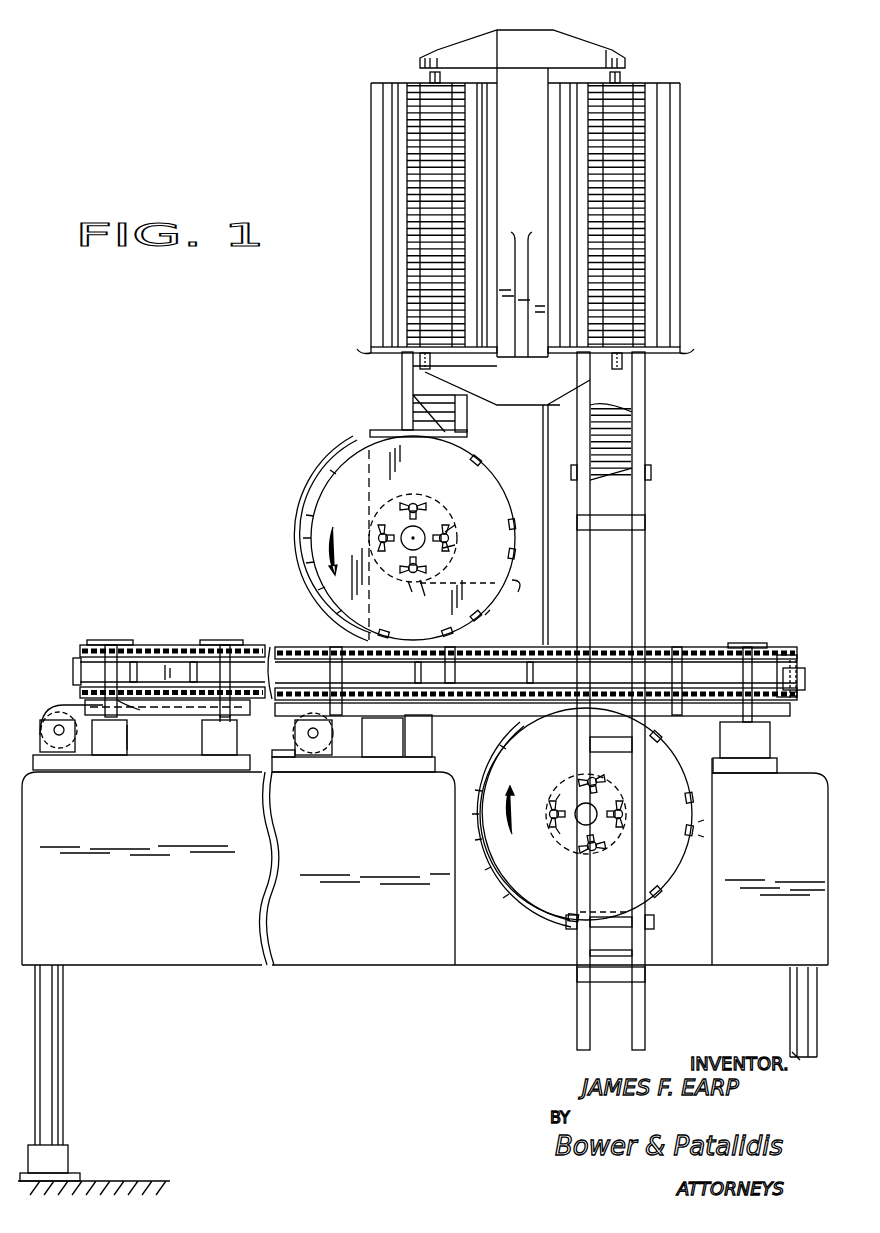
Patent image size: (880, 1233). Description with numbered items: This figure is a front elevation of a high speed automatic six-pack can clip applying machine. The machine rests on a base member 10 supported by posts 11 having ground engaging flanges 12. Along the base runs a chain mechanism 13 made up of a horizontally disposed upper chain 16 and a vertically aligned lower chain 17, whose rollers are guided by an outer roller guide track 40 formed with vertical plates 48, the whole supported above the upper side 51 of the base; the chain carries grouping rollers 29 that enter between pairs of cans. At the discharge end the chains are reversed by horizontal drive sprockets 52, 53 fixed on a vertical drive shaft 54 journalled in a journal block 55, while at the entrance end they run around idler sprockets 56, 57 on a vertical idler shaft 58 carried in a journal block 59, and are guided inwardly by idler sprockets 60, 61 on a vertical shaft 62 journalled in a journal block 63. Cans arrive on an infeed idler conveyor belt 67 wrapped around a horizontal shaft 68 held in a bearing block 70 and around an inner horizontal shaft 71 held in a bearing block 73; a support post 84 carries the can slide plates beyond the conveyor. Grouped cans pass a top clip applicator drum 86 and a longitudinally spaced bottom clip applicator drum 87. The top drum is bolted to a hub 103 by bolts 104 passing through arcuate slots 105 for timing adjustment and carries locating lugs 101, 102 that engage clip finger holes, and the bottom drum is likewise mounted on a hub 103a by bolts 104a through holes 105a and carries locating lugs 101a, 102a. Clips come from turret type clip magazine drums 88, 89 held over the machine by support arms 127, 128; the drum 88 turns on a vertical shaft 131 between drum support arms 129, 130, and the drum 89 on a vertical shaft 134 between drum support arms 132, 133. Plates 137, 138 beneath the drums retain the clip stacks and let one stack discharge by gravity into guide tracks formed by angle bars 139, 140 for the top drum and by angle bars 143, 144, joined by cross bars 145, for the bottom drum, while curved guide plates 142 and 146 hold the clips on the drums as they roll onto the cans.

The base member 10 is at (212, 968).
The posts 11 is at (50, 1040).
The ground engaging flanges 12 is at (72, 1173).
The chain mechanism 13 is at (158, 646).
The upper chain 16 is at (88, 643).
The lower chain 17 is at (78, 692).
The grouping roller 29 is at (110, 670).
The outer roller guide track 40 is at (178, 672).
The plates 48 is at (285, 700).
The upper side 51 is at (190, 767).
The horizontal drive sprocket 52 is at (750, 645).
The horizontal drive sprocket 53 is at (760, 712).
The vertical drive shaft 54 is at (745, 668).
The journal block 55 is at (760, 745).
The idler sprocket 56 is at (113, 645).
The idler sprocket 57 is at (120, 712).
The vertical idler shaft 58 is at (117, 740).
The journal block 59 is at (128, 738).
The idler sprocket 60 is at (225, 644).
The idler sprocket 61 is at (240, 714).
The vertical shaft 62 is at (222, 722).
The journal block 63 is at (232, 760).
The infeed idler conveyor belt 67 is at (52, 742).
The horizontal shaft 68 is at (59, 736).
The bearing block 70 is at (60, 738).
The horizontal shaft 71 is at (313, 740).
The bearing block 73 is at (335, 745).
The support post 84 is at (418, 765).
The top clip applicator drum 86 is at (325, 492).
The bottom clip applicator drum 87 is at (545, 890).
The clip magazine drum 88 is at (388, 141).
The clip magazine drum 89 is at (686, 156).
The locating lug 101 is at (518, 515).
The locating lug 102 is at (515, 572).
The hub 103 is at (447, 508).
The bolts 104 is at (418, 503).
The arcuate slots 105 is at (452, 533).
The locating lug 101a is at (697, 800).
The locating lug 102a is at (697, 832).
The hub 103a is at (550, 775).
The bolts 104a is at (554, 826).
The holes 105a is at (556, 802).
The support arm 127 is at (530, 78).
The support arm 128 is at (512, 366).
The drum support arm 129 is at (462, 50).
The drum support arm 130 is at (428, 365).
The vertical shaft 131 is at (432, 78).
The drum support arm 132 is at (607, 57).
The drum support arm 133 is at (612, 370).
The vertical shaft 134 is at (620, 78).
The plate 137 is at (380, 352).
The plate 138 is at (660, 352).
The angle bar 139 is at (413, 400).
The angle bar 140 is at (458, 410).
The guide plate 142 is at (332, 468).
The angle bar 143 is at (582, 495).
The angle bar 144 is at (636, 442).
The cross bars 145 is at (636, 522).
The guide plate 146 is at (548, 912).